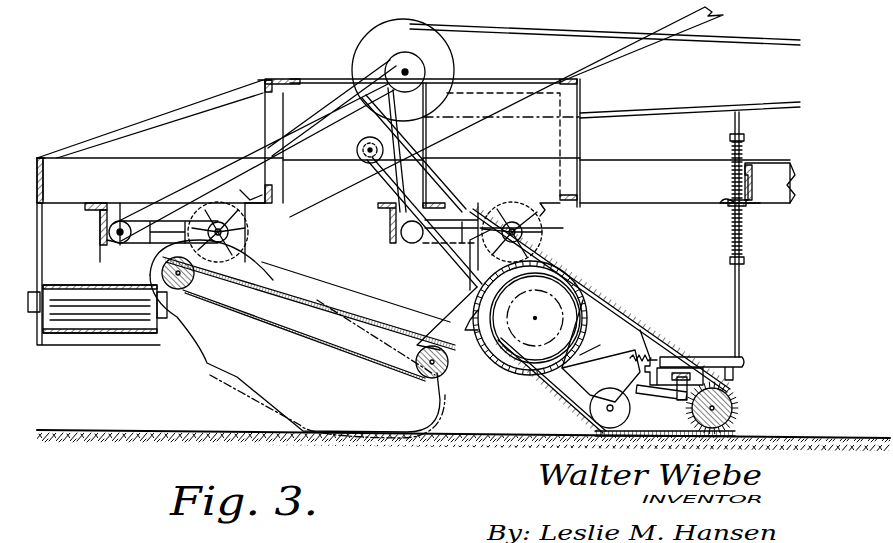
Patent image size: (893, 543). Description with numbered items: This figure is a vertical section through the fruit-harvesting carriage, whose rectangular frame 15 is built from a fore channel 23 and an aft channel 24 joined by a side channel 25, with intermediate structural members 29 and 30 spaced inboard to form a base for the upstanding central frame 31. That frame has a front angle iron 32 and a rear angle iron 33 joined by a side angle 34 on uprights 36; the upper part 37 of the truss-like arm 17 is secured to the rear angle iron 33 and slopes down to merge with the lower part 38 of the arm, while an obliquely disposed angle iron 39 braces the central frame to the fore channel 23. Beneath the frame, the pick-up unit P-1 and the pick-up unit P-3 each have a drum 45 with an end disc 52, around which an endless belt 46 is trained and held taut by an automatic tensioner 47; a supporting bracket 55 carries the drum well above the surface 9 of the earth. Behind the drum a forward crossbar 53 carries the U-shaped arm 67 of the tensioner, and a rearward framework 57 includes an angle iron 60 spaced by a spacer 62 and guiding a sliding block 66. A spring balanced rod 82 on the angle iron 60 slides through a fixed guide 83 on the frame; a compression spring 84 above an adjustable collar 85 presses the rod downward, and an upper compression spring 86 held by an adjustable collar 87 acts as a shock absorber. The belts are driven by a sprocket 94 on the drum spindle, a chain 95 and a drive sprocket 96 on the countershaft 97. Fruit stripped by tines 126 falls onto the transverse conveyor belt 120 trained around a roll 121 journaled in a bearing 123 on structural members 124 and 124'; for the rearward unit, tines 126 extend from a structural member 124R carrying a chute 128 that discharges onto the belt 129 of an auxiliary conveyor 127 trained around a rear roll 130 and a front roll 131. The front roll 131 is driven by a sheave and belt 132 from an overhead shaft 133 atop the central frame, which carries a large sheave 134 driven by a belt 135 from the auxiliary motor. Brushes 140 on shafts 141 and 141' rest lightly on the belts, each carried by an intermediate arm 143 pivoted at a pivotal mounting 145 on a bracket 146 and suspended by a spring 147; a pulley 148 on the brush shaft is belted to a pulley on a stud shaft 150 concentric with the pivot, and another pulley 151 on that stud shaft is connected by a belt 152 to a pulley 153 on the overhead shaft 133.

The surface of the earth 9 is at (778, 440).
The frame 15 is at (108, 150).
The truss-like arm 17 is at (772, 168).
The fore channel 23 is at (44, 178).
The aft channel 24 is at (755, 190).
The side channel 25 is at (200, 160).
The intermediate structural member 29 is at (272, 183).
The intermediate structural member 30 is at (580, 192).
The central frame 31 is at (262, 73).
The front angle iron 32 is at (272, 78).
The rear angle iron 33 is at (580, 97).
The side angle 34 is at (505, 80).
The upright 36 is at (268, 110).
The upper part of truss-like arm 37 is at (654, 45).
The lower part of truss-like arm 38 is at (500, 148).
The obliquely disposed angle iron 39 is at (178, 117).
The drum 45 is at (590, 310).
The endless belt 46 is at (662, 330).
The automatic tensioner 47 is at (690, 420).
The end disc 52 is at (590, 330).
The forward crossbar 53 is at (598, 382).
The supporting bracket 55 is at (278, 243).
The rearward framework 57 is at (716, 352).
The angle iron 60 is at (724, 353).
The spacer 62 is at (720, 372).
The block 66 is at (680, 360).
The U-shaped arm 67 is at (585, 412).
The spring balanced rod 82 is at (742, 303).
The fixed guide 83 is at (725, 204).
The compression spring 84 is at (745, 232).
The adjustable collar 85 is at (745, 262).
The compression spring 86 is at (730, 150).
The adjustable collar 87 is at (745, 138).
The sprocket 94 is at (525, 345).
The chain 95 is at (458, 274).
The drive sprocket 96 is at (360, 160).
The countershaft 97 is at (364, 168).
The conveyor belt 120 is at (68, 290).
The roll 121 is at (100, 302).
The bearing 123 is at (34, 312).
The structural member 124 is at (98, 274).
The structural member 124' is at (143, 290).
The structural member 124R is at (462, 340).
The tine 126 is at (485, 290).
The auxiliary conveyor 127 is at (365, 290).
The chute 128 is at (458, 320).
The belt 129 is at (362, 318).
The rear roll 130 is at (345, 391).
The front roll 131 is at (195, 282).
The sheave and belt 132 is at (330, 120).
The overhead shaft 133 is at (408, 72).
The large sheave 134 is at (385, 30).
The belt 135 is at (728, 56).
The brush 140 is at (232, 200).
The shaft 141 is at (208, 219).
The shaft 141' is at (516, 217).
The intermediate arm 143 is at (148, 222).
The pivotal mounting 145 is at (118, 230).
The bracket 146 is at (112, 242).
The spring 147 is at (278, 216).
The pulley 148 is at (258, 190).
The stud shaft 150 is at (124, 242).
The pulley 151 is at (108, 230).
The belt 152 is at (303, 108).
The pulley 153 is at (400, 58).
The forwardly disposed pick-up unit P-1 is at (200, 392).
The rearwardly disposed pick-up unit P-3 is at (540, 402).